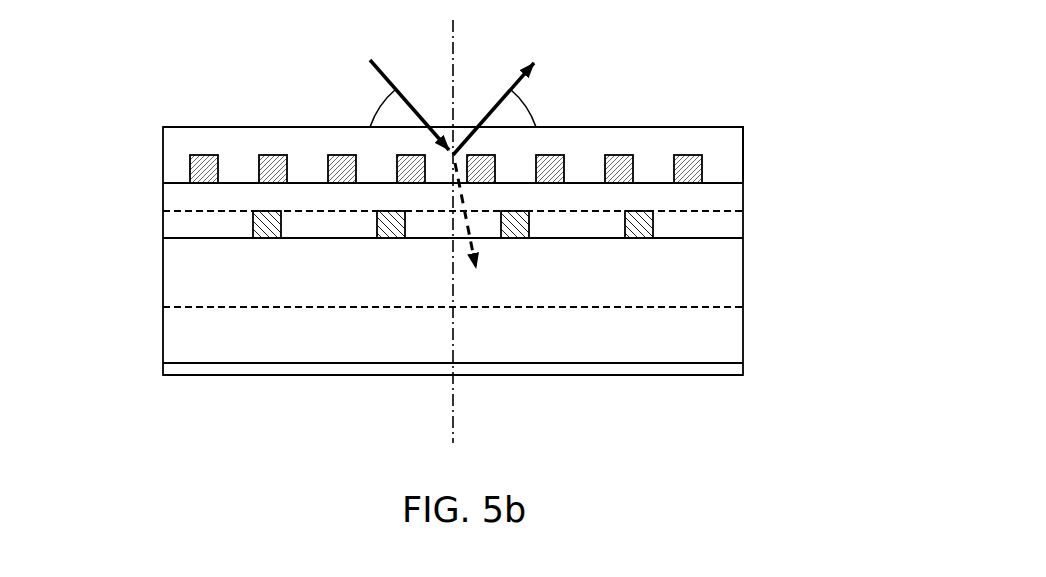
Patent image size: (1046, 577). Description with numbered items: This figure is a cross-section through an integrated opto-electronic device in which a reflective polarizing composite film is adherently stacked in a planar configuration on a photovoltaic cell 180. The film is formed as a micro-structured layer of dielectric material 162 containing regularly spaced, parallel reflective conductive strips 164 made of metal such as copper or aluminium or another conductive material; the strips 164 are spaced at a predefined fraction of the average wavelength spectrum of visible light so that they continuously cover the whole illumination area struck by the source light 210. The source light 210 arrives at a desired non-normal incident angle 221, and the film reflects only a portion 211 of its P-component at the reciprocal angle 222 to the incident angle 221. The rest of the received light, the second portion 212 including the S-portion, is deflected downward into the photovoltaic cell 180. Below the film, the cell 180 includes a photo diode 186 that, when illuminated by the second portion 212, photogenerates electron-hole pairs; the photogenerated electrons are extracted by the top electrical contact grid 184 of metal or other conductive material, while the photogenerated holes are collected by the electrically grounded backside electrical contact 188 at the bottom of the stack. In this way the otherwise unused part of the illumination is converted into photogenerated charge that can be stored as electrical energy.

The dielectric material 162 is at (743, 143).
The reflective conductive strips 164 is at (690, 173).
The photovoltaic cell 180 is at (108, 196).
The top electrical contact grid 184 is at (650, 228).
The photo diode 186 is at (163, 238).
The backside electrical contact 188 is at (605, 375).
The source light 210 is at (404, 91).
The reflected portion of P-component 211 is at (506, 93).
The second portion of received incident light 212 is at (482, 233).
The non-normal incident angle 221 is at (374, 103).
The reciprocal angle 222 is at (533, 110).